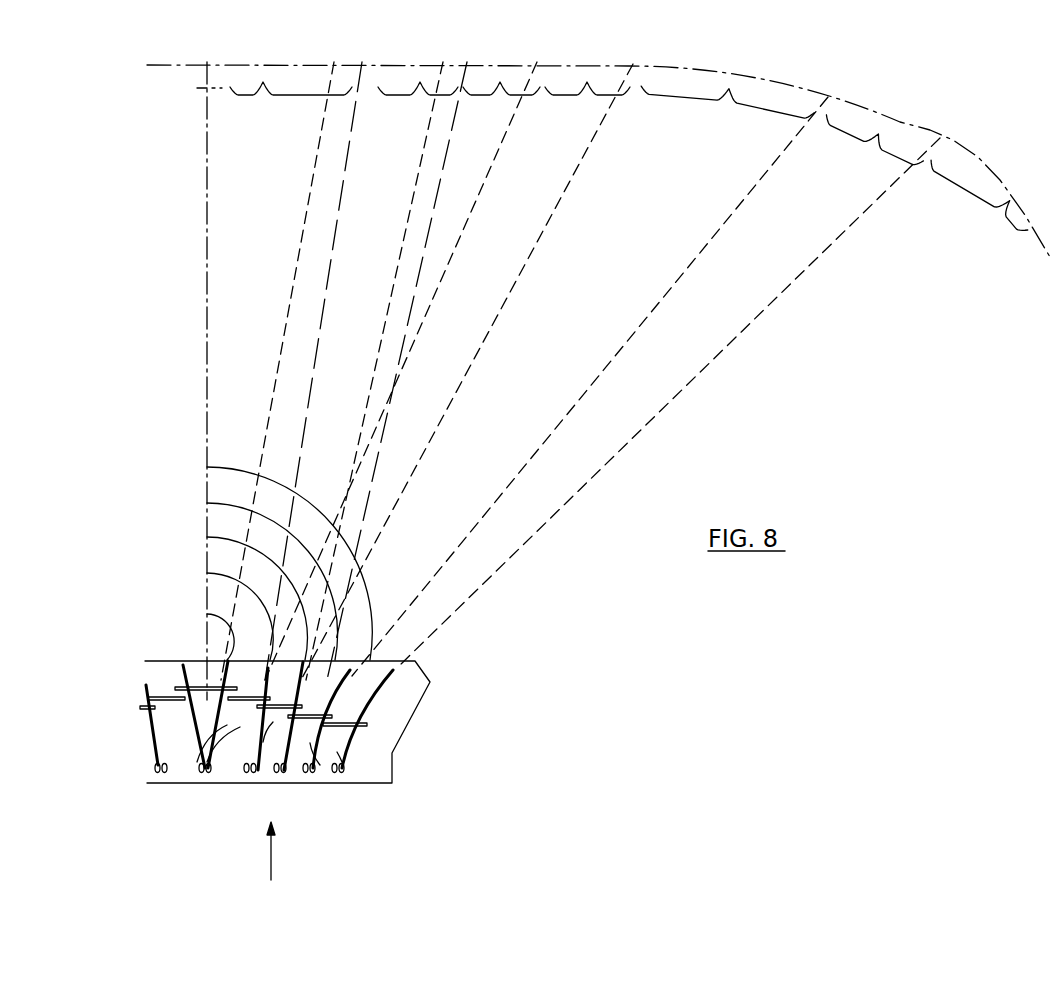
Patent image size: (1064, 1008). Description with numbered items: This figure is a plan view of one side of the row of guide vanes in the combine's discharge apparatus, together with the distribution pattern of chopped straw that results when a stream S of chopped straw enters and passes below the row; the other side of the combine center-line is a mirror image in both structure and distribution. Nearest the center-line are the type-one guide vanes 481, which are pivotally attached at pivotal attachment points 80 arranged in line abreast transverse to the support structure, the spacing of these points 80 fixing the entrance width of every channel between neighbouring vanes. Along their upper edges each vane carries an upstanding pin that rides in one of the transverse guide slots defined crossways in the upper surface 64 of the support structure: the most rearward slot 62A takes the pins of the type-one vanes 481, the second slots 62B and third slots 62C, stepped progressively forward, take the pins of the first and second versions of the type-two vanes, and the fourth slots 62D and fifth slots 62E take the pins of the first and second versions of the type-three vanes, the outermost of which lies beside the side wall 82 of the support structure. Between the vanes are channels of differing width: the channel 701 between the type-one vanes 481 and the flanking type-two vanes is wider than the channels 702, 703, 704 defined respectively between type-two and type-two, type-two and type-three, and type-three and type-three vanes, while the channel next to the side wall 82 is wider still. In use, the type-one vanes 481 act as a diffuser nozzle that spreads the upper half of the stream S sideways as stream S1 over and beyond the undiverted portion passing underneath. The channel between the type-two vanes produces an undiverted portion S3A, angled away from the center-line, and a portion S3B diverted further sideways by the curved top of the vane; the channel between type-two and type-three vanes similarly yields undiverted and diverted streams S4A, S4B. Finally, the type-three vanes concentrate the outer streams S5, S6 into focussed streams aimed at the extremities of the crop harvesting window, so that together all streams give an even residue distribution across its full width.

The sideways-spread stream S1 is at (291, 78).
The undiverted stream portion S3A is at (418, 78).
The undiverted stream S4A is at (501, 78).
The diverted stream portion S3B is at (587, 78).
The diverted stream S4B is at (727, 94).
The outer focussed stream S5 is at (874, 139).
The outermost focussed stream S6 is at (979, 195).
The first guide slot 62A is at (207, 614).
The second guide slot 62B is at (207, 573).
The third guide slot 62C is at (207, 537).
The fourth guide slot 62D is at (207, 503).
The fifth guide slot 62E is at (207, 467).
The side wall 82 is at (435, 667).
The pivotal attachment point 80 is at (185, 757).
The type 1 guide vane 481 is at (205, 768).
The upper surface 64 is at (400, 742).
The first channel 701 is at (148, 707).
The second channel 702 is at (142, 712).
The third channel 703 is at (327, 732).
The fourth channel 704 is at (362, 732).
The stream of chopped straw S is at (280, 851).